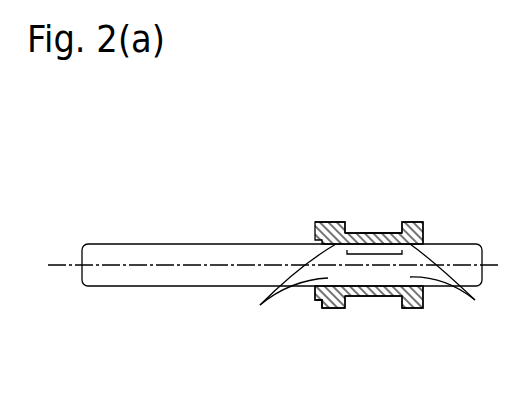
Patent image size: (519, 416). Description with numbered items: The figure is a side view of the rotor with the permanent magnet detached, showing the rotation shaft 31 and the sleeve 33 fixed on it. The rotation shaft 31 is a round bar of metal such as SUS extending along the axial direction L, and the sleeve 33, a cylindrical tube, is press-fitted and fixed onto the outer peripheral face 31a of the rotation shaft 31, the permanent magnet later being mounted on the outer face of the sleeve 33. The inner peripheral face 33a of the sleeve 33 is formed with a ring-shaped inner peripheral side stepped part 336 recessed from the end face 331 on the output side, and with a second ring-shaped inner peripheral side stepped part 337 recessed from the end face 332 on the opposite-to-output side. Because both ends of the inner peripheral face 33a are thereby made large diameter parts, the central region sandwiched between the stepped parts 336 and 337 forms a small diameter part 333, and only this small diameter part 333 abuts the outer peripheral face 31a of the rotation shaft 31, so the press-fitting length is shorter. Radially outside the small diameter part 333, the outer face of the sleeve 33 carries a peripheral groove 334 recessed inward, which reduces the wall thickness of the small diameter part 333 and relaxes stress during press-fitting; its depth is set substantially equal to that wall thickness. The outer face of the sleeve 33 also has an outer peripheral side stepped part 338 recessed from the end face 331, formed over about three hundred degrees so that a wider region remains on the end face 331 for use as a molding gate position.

The axial direction L is at (274, 255).
The rotation shaft 31 is at (122, 288).
The outer peripheral face of the rotation shaft 31a is at (408, 308).
The sleeve 33 is at (325, 222).
The inner peripheral face of the sleeve 33a is at (408, 308).
The end face on the output side 331 is at (313, 233).
The end face on the opposite-to-output side 332 is at (425, 233).
The small diameter part 333 is at (371, 233).
The peripheral groove 334 is at (379, 233).
The inner peripheral side stepped part 336 is at (290, 288).
The inner peripheral side stepped part 337 is at (454, 287).
The outer peripheral side stepped part 338 is at (316, 302).